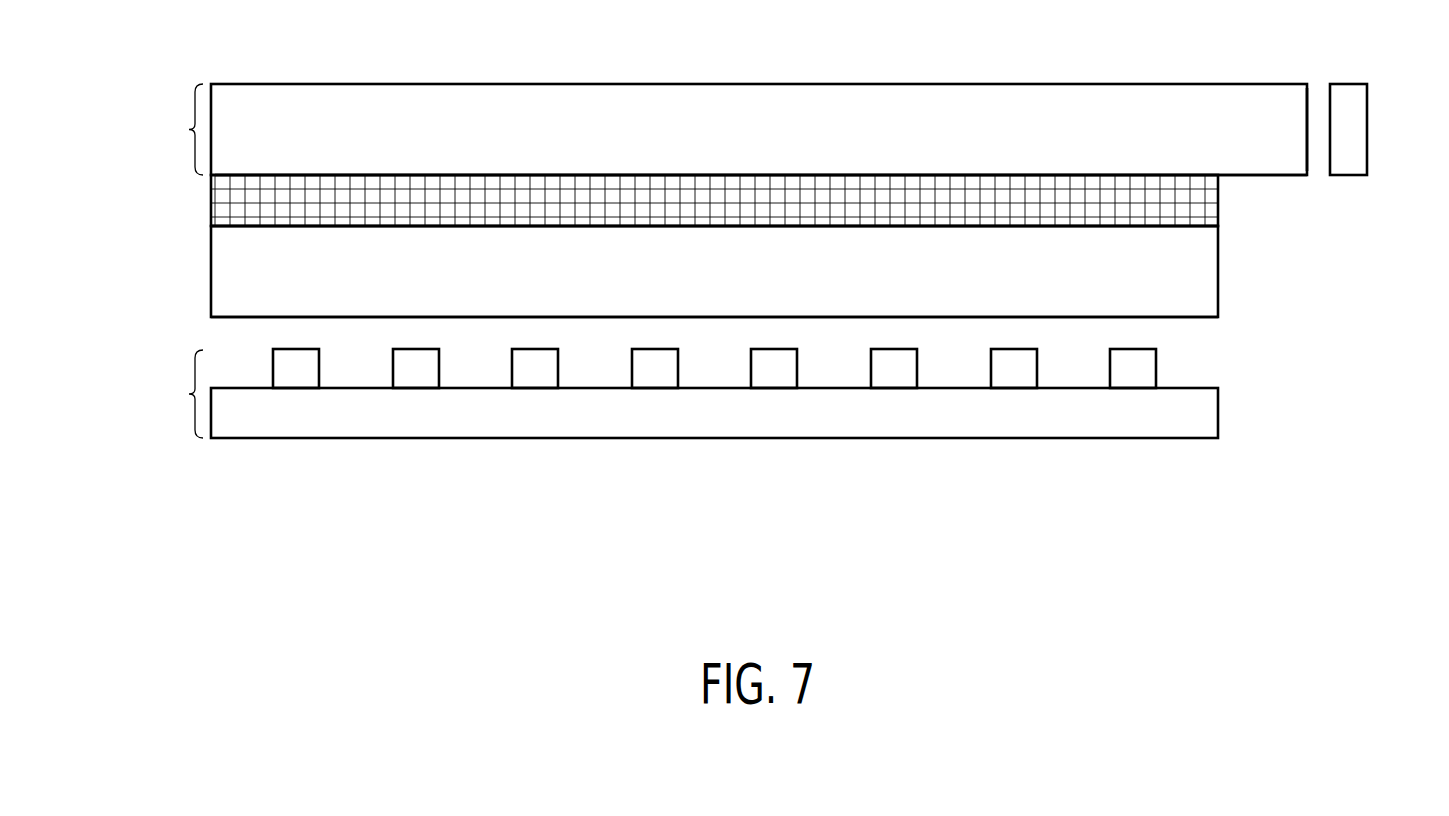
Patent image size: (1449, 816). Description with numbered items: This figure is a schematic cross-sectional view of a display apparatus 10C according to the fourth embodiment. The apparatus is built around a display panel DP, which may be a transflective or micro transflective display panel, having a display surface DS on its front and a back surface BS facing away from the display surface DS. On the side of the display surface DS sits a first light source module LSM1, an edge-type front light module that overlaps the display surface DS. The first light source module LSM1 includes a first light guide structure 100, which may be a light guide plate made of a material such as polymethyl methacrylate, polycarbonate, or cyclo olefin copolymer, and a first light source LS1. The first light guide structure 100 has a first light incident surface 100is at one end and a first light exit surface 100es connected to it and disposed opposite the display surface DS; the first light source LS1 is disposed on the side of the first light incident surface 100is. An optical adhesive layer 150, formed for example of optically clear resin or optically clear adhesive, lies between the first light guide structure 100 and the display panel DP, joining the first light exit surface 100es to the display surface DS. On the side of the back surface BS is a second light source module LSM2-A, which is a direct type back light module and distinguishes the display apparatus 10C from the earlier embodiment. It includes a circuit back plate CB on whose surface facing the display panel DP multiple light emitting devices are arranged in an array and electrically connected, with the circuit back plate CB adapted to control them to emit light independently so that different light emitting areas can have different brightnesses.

The first light guide structure 100 is at (660, 125).
The optical adhesive layer 150 is at (792, 200).
The first light incident surface 100is is at (1323, 121).
The first light exit surface 100es is at (264, 190).
The first light source module LSM1 is at (160, 129).
The first light source LS1 is at (1350, 132).
The display surface DS is at (1171, 210).
The display panel DP is at (1178, 278).
The back surface BS is at (1172, 332).
The second light source module LSM2-A is at (146, 394).
The circuit back plate CB is at (712, 413).
The display apparatus 10C is at (1411, 568).